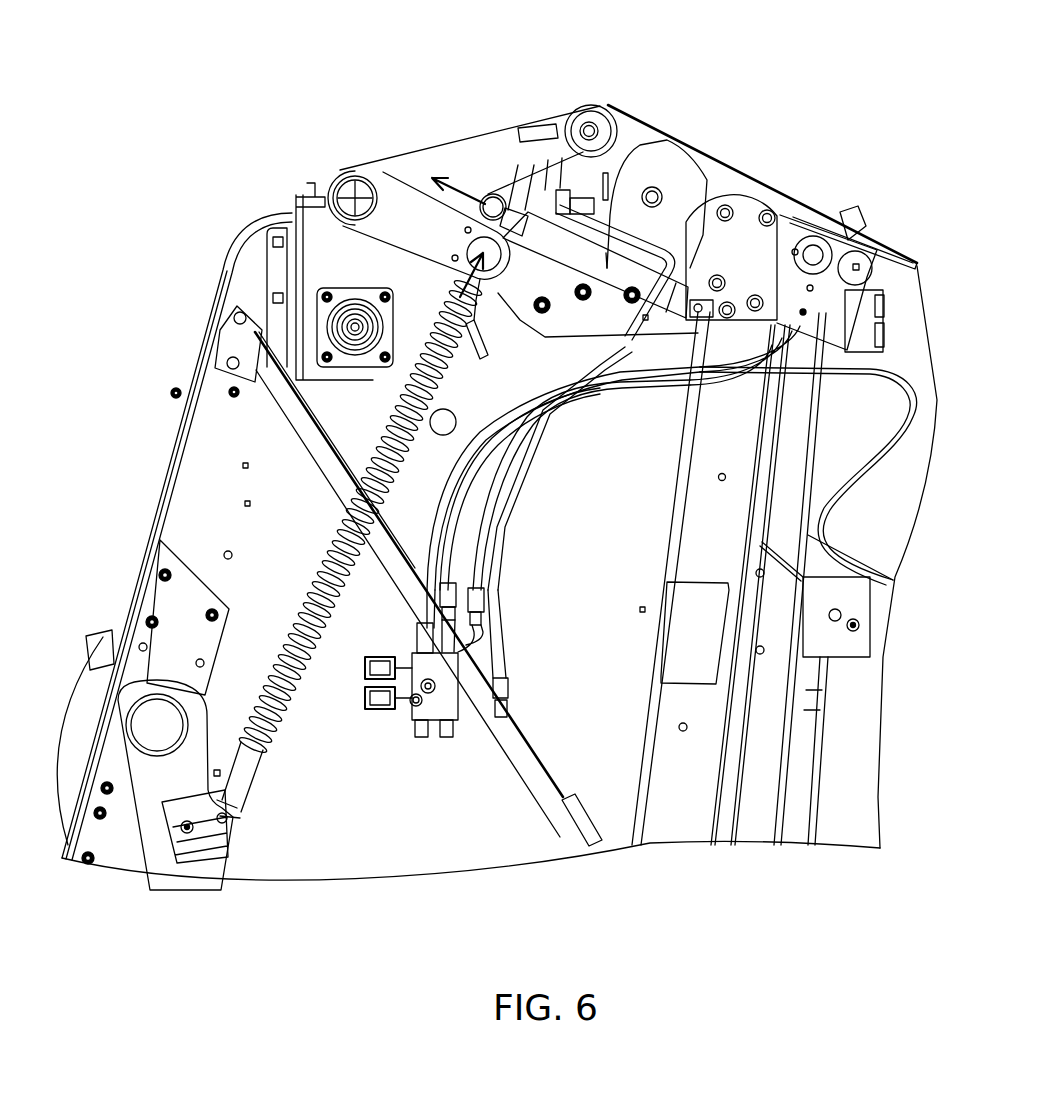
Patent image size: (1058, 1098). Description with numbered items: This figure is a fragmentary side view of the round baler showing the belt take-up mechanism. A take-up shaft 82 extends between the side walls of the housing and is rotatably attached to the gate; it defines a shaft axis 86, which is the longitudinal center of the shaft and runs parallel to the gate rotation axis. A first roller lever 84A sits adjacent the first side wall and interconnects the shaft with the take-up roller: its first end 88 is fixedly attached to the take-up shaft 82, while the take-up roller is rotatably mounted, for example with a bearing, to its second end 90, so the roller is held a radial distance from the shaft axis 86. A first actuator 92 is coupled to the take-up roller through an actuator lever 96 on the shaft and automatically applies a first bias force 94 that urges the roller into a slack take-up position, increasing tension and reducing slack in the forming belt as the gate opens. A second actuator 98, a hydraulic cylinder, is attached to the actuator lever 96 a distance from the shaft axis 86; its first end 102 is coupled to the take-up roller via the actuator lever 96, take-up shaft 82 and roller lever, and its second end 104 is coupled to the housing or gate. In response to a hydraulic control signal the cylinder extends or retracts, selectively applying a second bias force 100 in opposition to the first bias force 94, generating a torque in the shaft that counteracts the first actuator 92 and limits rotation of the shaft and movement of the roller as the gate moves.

The take-up shaft 82 is at (608, 103).
The first roller lever 84A is at (410, 145).
The shaft axis 86 is at (340, 170).
The first end 88 is at (345, 222).
The second end 90 is at (583, 112).
The first actuator 92 is at (297, 697).
The first bias force 94 is at (490, 328).
The actuator lever 96 is at (436, 237).
The second actuator 98 is at (608, 265).
The second bias force 100 is at (468, 183).
The first end 102 is at (493, 194).
The second end 104 is at (668, 265).